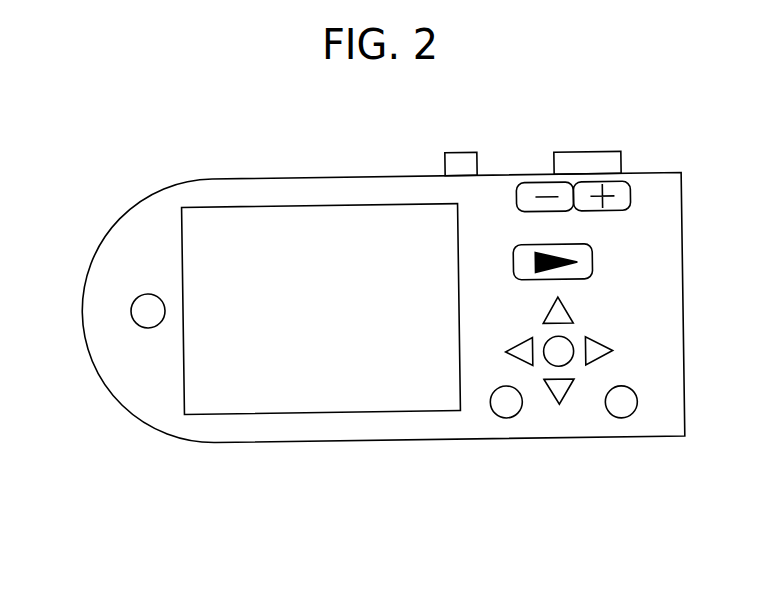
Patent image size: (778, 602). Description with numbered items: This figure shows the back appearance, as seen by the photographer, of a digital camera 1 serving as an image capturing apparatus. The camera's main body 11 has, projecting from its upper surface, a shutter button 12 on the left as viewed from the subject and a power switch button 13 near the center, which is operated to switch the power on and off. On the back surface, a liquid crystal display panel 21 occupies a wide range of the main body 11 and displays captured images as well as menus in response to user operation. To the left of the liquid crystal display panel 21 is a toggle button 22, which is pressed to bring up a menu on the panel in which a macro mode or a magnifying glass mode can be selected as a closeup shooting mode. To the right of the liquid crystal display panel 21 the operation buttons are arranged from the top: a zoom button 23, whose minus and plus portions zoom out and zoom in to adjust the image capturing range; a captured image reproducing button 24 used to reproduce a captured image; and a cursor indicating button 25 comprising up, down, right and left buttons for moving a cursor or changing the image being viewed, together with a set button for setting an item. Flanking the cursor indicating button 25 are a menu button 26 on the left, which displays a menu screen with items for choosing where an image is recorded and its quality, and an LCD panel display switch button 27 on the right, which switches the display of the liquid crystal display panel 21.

The digital camera 1 is at (705, 485).
The main body 11 is at (660, 388).
The shutter button 12 is at (588, 156).
The power switch button 13 is at (461, 153).
The liquid crystal display panel 21 is at (333, 412).
The toggle button 22 is at (132, 304).
The zoom button 23 is at (632, 194).
The captured image reproducing button 24 is at (593, 262).
The cursor indicating button 25 is at (592, 332).
The menu button 26 is at (500, 419).
The LCD panel display switch button 27 is at (616, 421).